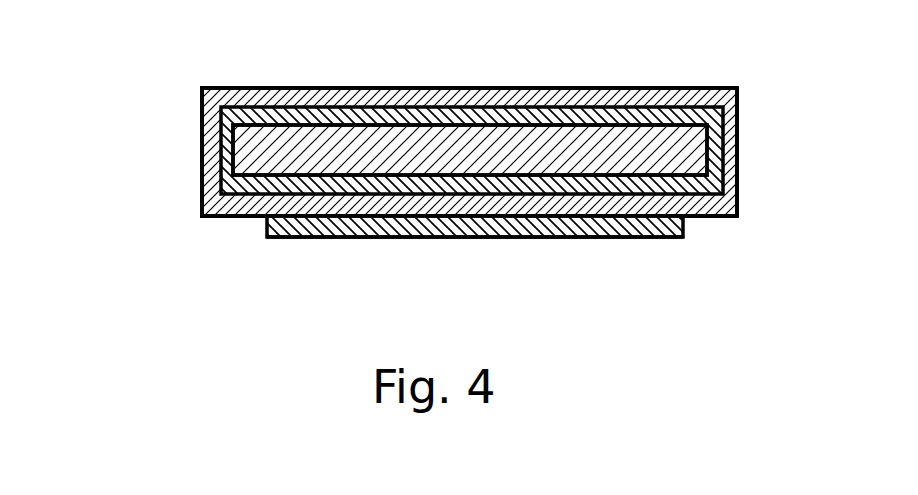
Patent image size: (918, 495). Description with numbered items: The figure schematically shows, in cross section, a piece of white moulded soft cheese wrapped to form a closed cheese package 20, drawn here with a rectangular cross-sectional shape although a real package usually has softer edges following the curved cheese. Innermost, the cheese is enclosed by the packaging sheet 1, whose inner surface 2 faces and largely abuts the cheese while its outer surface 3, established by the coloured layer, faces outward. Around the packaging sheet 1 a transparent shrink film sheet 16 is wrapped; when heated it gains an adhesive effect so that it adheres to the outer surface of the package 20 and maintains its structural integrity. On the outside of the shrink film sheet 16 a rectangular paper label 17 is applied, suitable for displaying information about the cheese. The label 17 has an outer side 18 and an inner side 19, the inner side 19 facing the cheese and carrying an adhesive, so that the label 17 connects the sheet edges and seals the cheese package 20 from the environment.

The cheese package 20 is at (92, 150).
The shrink film sheet 16 is at (723, 203).
The outer surface 3 is at (535, 108).
The inner surface 2 is at (555, 122).
The packaging sheet 1 is at (712, 172).
The paper label 17 is at (538, 227).
The inner side 19 is at (277, 217).
The outer side 18 is at (288, 237).